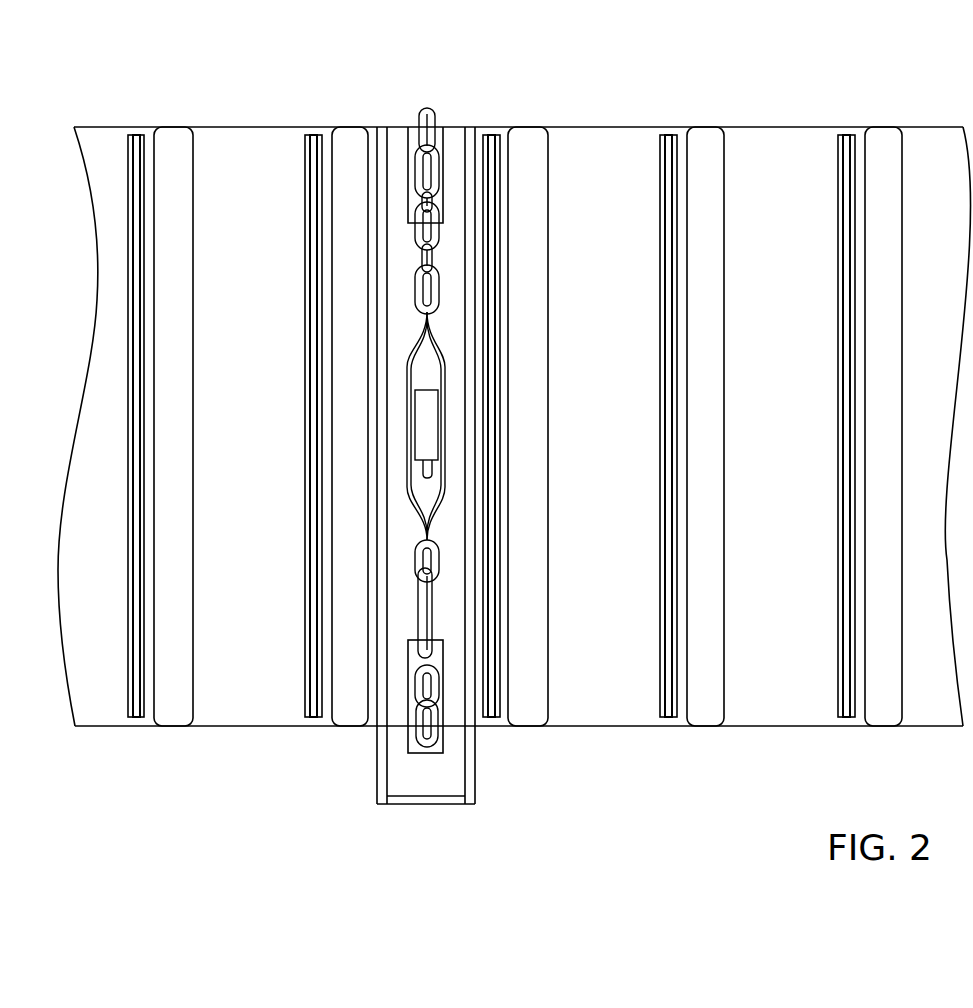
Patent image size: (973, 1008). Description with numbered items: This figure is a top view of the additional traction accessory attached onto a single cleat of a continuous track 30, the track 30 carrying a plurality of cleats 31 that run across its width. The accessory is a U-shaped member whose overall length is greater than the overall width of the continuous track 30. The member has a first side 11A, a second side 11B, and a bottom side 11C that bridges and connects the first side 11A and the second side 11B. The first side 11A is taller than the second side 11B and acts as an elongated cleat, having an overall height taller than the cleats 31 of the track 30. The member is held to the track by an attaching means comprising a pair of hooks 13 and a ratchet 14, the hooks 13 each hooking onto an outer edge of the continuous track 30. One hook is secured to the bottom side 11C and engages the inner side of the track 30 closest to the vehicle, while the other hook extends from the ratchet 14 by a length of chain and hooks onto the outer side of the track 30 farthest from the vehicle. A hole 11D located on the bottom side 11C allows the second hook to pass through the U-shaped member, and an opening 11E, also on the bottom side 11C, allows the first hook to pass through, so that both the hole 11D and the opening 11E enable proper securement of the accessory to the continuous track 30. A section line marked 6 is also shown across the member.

The continuous track 30 is at (240, 153).
The cleats 31 is at (319, 147).
The first side 11A is at (470, 773).
The second side 11B is at (383, 752).
The bottom side 11C is at (447, 790).
The hole 11D is at (408, 688).
The opening 11E is at (445, 180).
The hooks 13 is at (427, 110).
The ratchet 14 is at (428, 608).
The section line 6- 6 is at (462, 45).